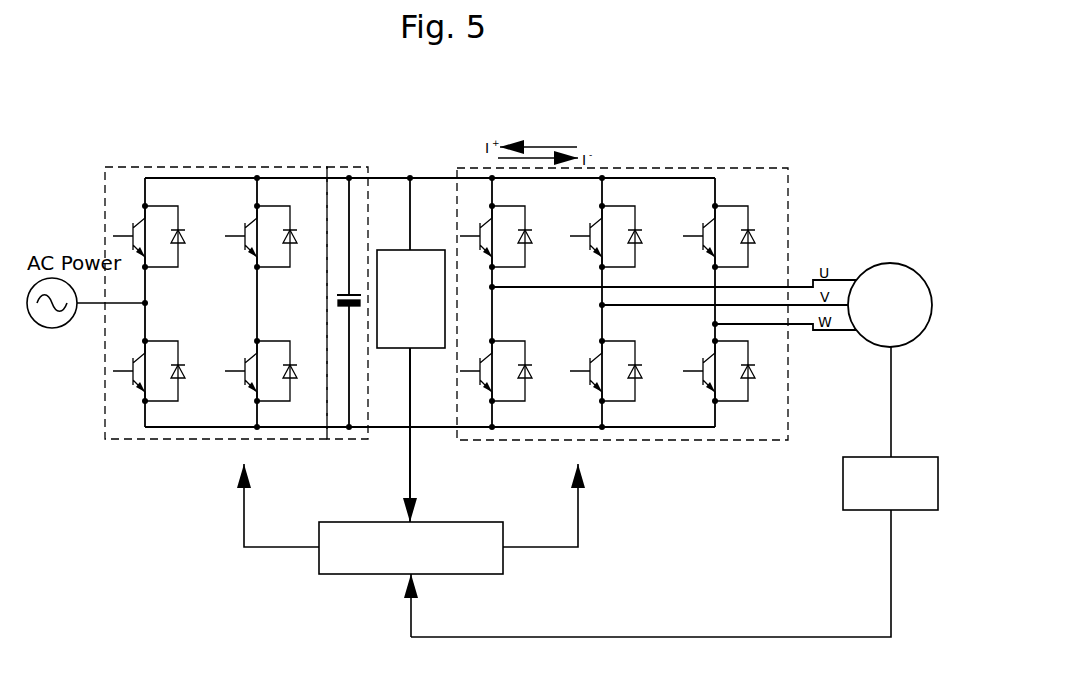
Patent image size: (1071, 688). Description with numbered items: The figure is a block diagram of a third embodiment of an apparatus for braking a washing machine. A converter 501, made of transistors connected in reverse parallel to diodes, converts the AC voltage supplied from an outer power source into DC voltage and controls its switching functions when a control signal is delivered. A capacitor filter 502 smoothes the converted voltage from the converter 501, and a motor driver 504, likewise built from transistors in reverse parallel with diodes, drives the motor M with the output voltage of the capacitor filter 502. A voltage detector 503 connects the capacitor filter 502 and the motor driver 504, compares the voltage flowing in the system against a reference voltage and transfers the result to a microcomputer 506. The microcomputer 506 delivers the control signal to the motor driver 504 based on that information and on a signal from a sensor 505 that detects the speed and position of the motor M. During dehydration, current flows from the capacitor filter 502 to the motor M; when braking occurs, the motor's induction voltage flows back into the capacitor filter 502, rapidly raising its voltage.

The converter 501 is at (217, 264).
The capacitor filter 502 is at (350, 167).
The voltage detector 503 is at (425, 250).
The motor driver 504 is at (622, 258).
The sensor 505 is at (843, 485).
The microcomputer 506 is at (319, 566).